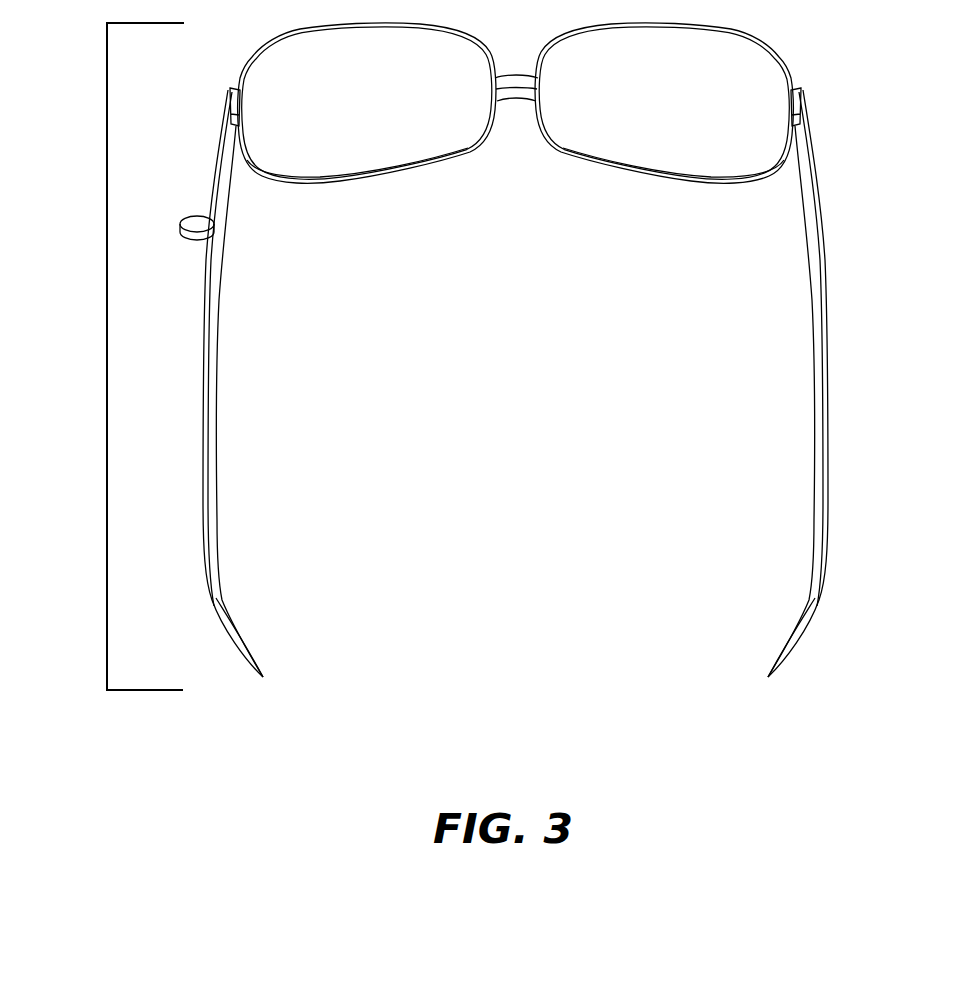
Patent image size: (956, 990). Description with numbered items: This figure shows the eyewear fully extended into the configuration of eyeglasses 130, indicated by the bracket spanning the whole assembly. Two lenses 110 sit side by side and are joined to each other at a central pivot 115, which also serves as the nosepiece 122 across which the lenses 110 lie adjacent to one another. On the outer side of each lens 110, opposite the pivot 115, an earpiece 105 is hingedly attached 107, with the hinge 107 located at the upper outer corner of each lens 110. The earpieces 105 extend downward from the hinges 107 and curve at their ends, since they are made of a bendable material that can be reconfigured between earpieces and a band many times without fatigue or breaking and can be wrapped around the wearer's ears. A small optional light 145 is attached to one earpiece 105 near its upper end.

The earpieces 105 is at (220, 368).
The hinged attachment 107 is at (233, 88).
The lenses 110 is at (293, 160).
The pivot 115 is at (515, 76).
The nosepiece 122 is at (507, 91).
The eyeglasses 130 is at (107, 346).
The small lamp 145 is at (197, 220).